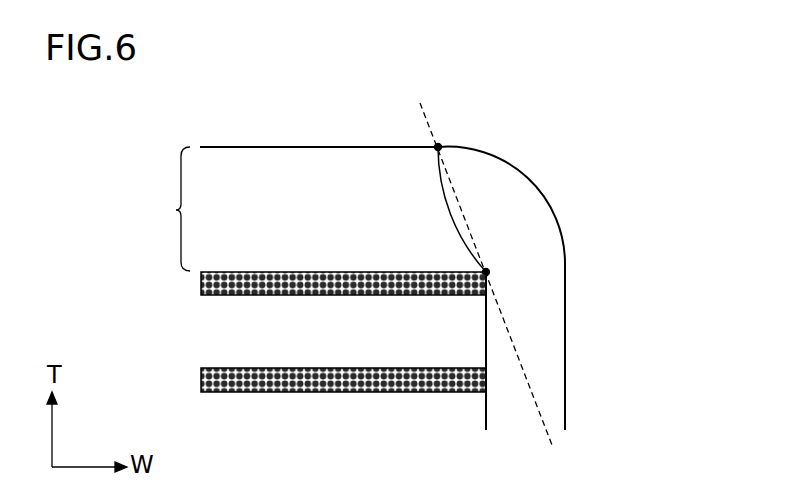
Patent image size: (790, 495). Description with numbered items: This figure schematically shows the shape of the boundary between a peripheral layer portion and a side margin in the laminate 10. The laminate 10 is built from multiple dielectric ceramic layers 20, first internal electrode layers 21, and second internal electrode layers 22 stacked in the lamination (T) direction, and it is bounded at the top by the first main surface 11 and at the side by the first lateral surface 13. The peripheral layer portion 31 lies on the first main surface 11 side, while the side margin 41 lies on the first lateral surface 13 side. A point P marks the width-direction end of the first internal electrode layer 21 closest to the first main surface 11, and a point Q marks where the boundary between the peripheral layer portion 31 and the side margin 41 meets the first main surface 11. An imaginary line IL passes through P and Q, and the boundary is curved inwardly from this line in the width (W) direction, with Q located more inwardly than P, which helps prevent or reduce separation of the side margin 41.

The laminate 10 is at (582, 183).
The first main surface 11 is at (232, 146).
The first lateral surface 13 is at (565, 397).
The dielectric ceramic layer 20 is at (208, 330).
The first internal electrode layer 21 is at (206, 282).
The second internal electrode layer 22 is at (206, 377).
The peripheral layer portion 31 is at (165, 209).
The side margin 41 is at (538, 343).